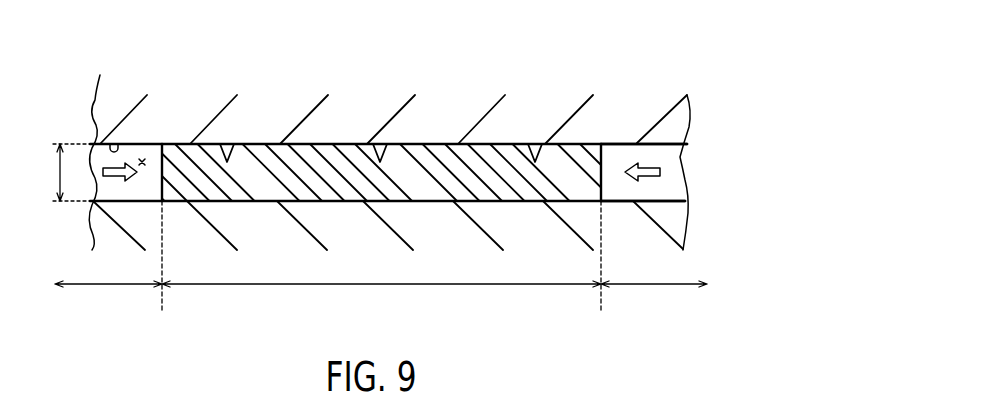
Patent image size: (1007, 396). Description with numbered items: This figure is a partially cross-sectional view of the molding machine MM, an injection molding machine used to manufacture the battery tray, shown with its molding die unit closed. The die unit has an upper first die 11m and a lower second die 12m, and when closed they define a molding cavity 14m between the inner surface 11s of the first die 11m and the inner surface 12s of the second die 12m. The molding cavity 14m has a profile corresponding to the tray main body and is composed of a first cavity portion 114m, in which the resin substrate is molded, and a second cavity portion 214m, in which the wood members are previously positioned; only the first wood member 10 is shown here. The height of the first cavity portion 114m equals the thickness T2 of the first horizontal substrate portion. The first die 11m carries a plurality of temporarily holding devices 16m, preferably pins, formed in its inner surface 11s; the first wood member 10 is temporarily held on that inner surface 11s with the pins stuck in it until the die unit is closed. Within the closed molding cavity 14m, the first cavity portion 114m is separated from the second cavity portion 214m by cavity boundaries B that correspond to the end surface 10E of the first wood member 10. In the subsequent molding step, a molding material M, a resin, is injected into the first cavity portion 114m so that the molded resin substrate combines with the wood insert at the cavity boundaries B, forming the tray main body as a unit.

The first wood member 10 is at (302, 153).
The end surface of the first wood member 10E is at (162, 152).
The inner surface of the first die 11s is at (85, 100).
The first die 11m is at (640, 115).
The inner surface of the second die 12s is at (97, 196).
The second die 12m is at (670, 225).
The molding cavity 14m is at (142, 158).
The temporarily holding devices 16m is at (535, 158).
The molding machine MM is at (649, 59).
The molding material M is at (645, 183).
The thickness of the first horizontal substrate portion T2 is at (40, 172).
The cavity boundaries B is at (381, 271).
The first cavity portion 114m is at (381, 298).
The second cavity portion 214m is at (381, 299).